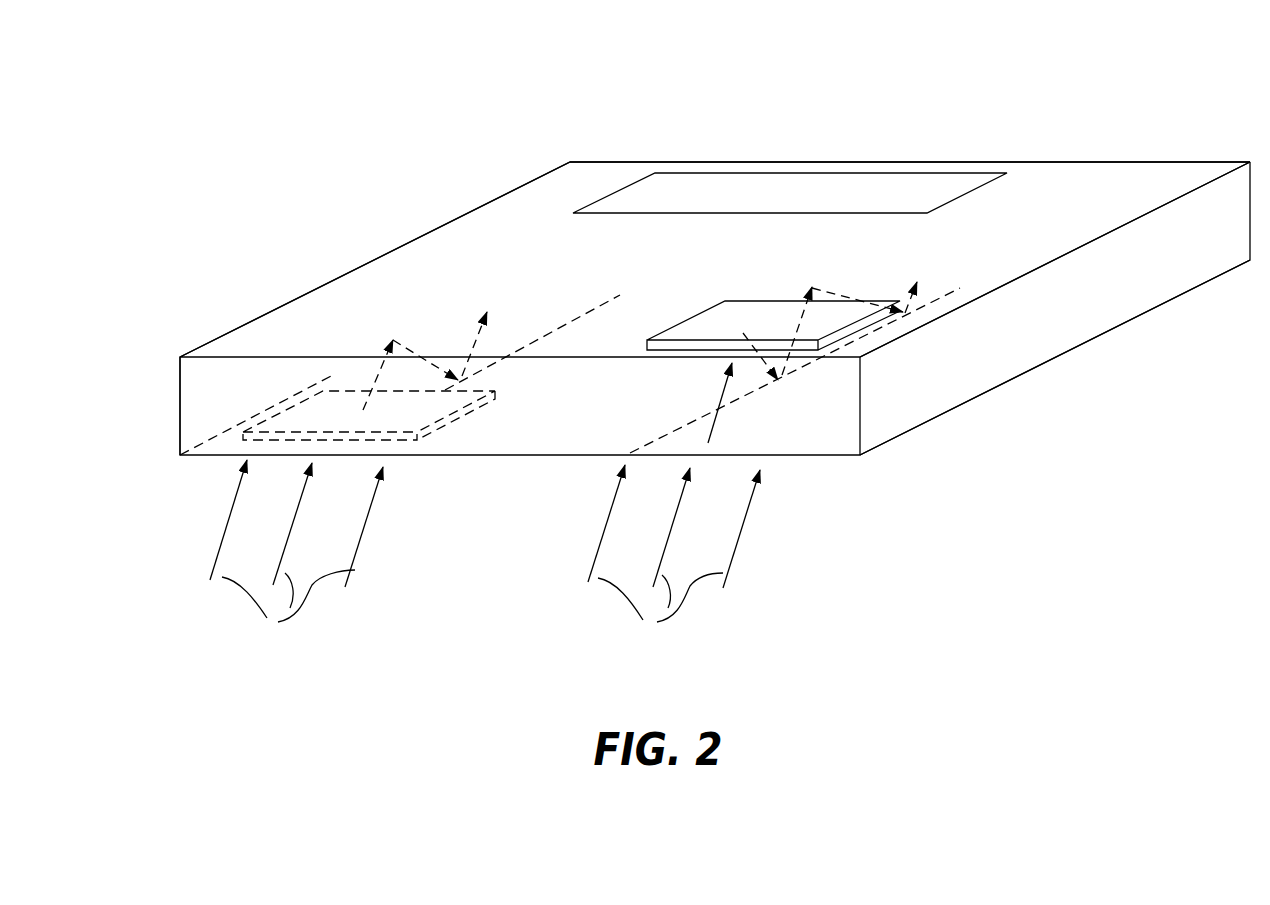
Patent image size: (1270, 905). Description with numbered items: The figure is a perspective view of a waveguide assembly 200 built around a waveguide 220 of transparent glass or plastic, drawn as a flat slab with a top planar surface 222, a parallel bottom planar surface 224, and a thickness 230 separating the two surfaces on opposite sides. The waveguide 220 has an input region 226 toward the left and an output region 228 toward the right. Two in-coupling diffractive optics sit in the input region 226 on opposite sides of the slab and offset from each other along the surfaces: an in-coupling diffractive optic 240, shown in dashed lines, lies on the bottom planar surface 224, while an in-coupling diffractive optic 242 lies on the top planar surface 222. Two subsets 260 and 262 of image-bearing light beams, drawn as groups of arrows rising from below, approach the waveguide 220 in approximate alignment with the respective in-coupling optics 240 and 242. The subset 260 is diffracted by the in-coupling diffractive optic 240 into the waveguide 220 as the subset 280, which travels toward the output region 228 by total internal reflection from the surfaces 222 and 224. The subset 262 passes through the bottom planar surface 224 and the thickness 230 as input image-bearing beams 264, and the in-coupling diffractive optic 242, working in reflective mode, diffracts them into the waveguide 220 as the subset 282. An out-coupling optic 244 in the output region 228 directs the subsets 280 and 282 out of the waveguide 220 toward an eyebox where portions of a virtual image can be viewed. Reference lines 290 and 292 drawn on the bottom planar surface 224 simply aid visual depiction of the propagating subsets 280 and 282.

The waveguide assembly 200 is at (703, 70).
The waveguide 220 is at (400, 246).
The top planar surface 222 is at (963, 310).
The bottom planar surface 224 is at (953, 412).
The input region 226 is at (238, 312).
The output region 228 is at (527, 183).
The thickness 230 is at (178, 397).
The in-coupling diffractive optic 240 is at (413, 446).
The in-coupling diffractive optic 242 is at (747, 307).
The out-coupling optic 244 is at (793, 188).
The subset of image-bearing light beams 260 is at (296, 557).
The subset of image-bearing light beams 262 is at (674, 562).
The input image-bearing beams 264 is at (708, 420).
The subset of image-bearing light beams 280 is at (367, 377).
The subset of image-bearing light beams 282 is at (758, 360).
The reference line 290 is at (530, 340).
The reference line 292 is at (932, 300).